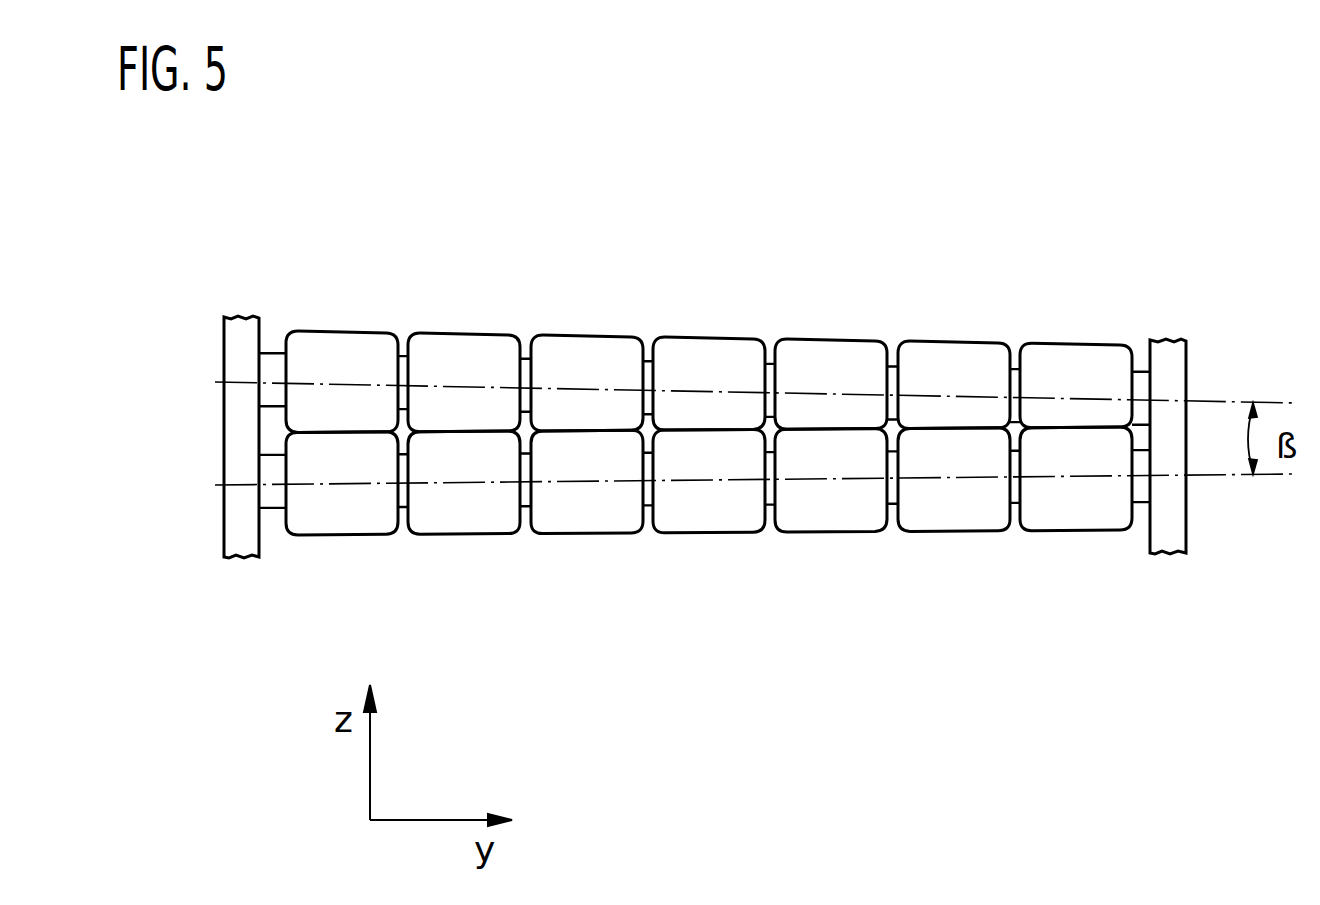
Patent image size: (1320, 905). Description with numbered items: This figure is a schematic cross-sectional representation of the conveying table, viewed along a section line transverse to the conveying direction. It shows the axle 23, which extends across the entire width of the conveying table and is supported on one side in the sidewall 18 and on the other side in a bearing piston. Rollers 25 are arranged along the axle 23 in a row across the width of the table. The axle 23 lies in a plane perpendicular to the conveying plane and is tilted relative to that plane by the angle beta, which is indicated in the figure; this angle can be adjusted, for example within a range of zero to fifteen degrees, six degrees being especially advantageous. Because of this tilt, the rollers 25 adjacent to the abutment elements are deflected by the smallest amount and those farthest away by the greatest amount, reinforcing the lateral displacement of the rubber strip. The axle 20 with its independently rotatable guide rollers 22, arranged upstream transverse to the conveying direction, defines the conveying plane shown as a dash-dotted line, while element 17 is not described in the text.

The right end plate 17 is at (1175, 510).
The sidewall 18 is at (237, 512).
The axle 20 is at (1142, 487).
The guide rollers 22 is at (610, 517).
The axle 23 is at (1140, 385).
The rollers 25 is at (943, 355).